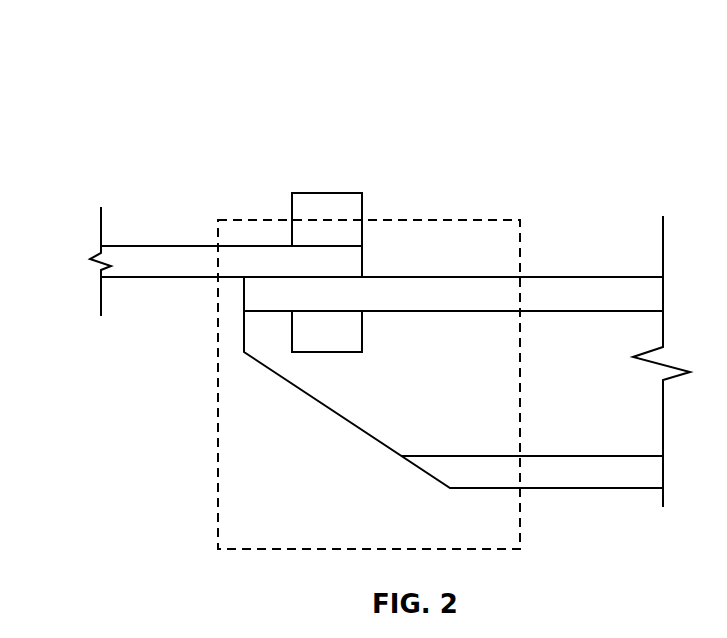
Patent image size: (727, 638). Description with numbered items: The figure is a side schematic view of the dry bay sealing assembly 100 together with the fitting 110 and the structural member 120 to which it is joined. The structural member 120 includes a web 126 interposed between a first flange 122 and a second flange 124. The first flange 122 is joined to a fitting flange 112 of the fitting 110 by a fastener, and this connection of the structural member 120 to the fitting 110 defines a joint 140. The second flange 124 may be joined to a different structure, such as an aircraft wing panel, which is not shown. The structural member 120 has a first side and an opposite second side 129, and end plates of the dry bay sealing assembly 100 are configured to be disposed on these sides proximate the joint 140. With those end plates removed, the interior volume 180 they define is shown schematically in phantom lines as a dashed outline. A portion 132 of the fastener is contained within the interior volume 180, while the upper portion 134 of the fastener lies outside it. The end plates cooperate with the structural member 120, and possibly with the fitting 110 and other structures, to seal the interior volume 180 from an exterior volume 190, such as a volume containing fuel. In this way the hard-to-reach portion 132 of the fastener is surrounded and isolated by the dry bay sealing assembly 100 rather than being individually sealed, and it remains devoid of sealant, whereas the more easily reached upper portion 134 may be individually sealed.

The dry bay sealing assembly 100 is at (232, 70).
The fitting 110 is at (152, 232).
The fitting flange 112 is at (176, 257).
The structural member 120 is at (542, 495).
The first flange 122 is at (560, 282).
The second flange 124 is at (638, 475).
The web 126 is at (558, 430).
The second side 129 is at (197, 458).
The portion of the fastener 132 is at (376, 239).
The upper portion of fastener 134 is at (353, 193).
The joint 140 is at (365, 267).
The interior volume 180 is at (263, 550).
The exterior volume 190 is at (323, 117).